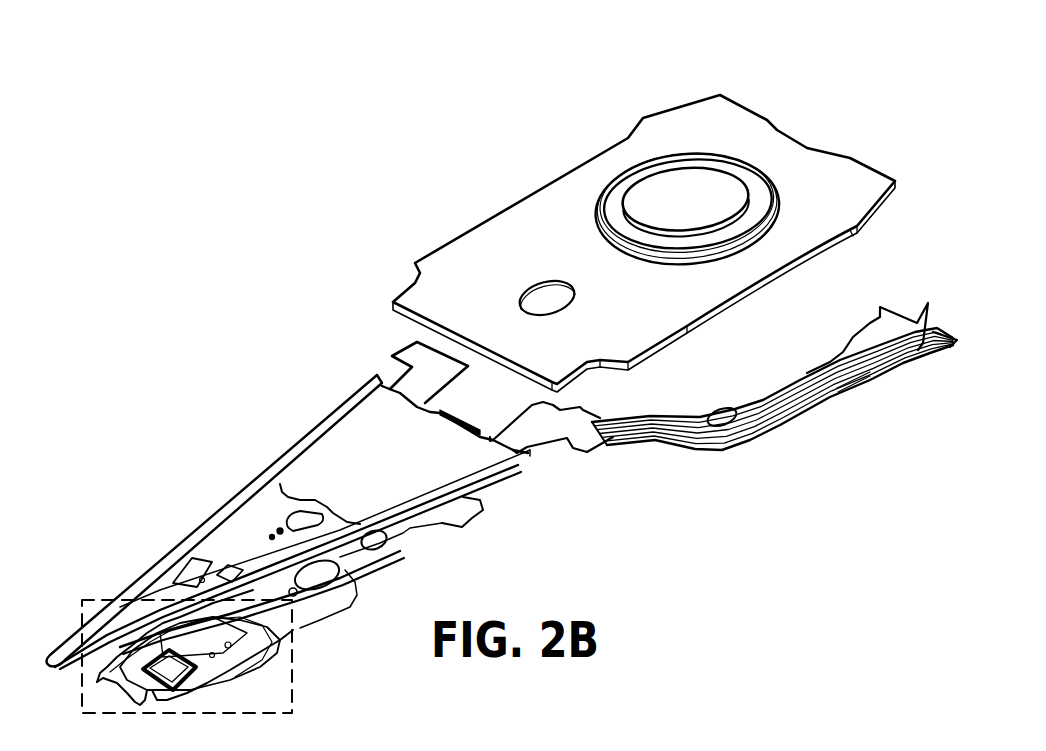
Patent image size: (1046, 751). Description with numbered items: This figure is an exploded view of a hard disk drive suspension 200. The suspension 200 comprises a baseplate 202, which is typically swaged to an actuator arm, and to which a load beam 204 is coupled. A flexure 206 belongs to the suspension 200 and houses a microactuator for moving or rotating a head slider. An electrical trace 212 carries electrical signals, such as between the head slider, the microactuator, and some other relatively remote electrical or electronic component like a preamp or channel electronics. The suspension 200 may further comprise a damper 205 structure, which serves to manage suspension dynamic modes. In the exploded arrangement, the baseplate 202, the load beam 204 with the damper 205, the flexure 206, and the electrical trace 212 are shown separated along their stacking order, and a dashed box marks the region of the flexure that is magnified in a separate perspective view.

The suspension 200 is at (451, 44).
The baseplate 202 is at (670, 127).
The load beam 204 is at (188, 548).
The damper 205 is at (328, 470).
The flexure 206 is at (435, 523).
The electrical trace 212 is at (763, 427).